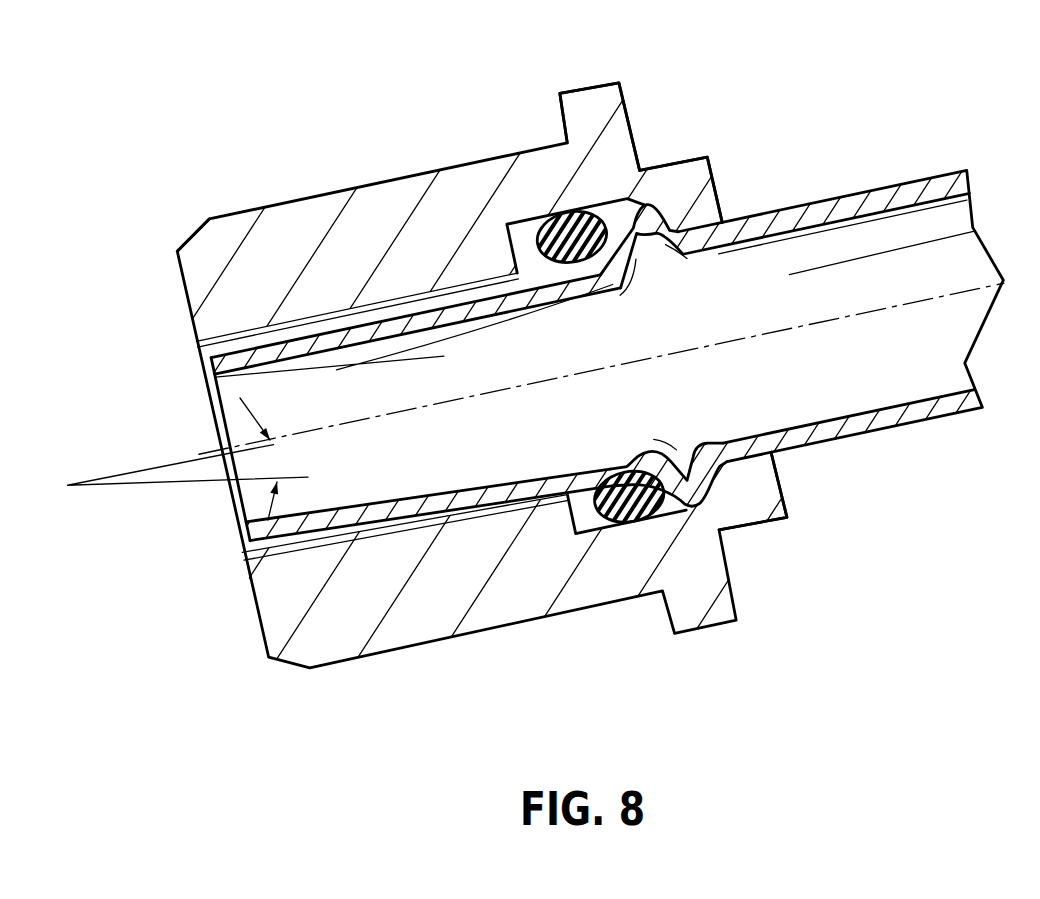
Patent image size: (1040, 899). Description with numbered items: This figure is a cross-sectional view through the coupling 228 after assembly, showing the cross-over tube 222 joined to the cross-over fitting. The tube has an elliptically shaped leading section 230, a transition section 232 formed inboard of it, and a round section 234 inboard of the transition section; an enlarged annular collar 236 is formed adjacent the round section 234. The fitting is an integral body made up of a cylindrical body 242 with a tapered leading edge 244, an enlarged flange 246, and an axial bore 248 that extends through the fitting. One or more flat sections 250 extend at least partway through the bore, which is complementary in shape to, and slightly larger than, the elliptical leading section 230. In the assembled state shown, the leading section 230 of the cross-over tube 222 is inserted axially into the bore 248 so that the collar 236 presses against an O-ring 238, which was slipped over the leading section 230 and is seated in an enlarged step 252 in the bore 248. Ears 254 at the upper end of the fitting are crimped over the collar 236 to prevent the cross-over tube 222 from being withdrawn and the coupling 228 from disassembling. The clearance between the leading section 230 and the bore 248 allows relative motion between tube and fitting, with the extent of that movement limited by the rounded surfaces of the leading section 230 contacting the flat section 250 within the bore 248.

The cross-over tube 222 is at (950, 410).
The coupling 228 is at (203, 553).
The leading section 230 is at (217, 368).
The transition section 232 is at (460, 313).
The round section 234 is at (551, 283).
The enlarged annular collar 236 is at (628, 228).
The O-ring 238 is at (627, 508).
The cylindrical body 242 is at (389, 196).
The tapered leading edge 244 is at (194, 236).
The enlarged flange 246 is at (593, 103).
The axial bore 248 is at (283, 562).
The flat section 250 is at (197, 347).
The enlarged step 252 is at (506, 242).
The ears 254 is at (712, 160).